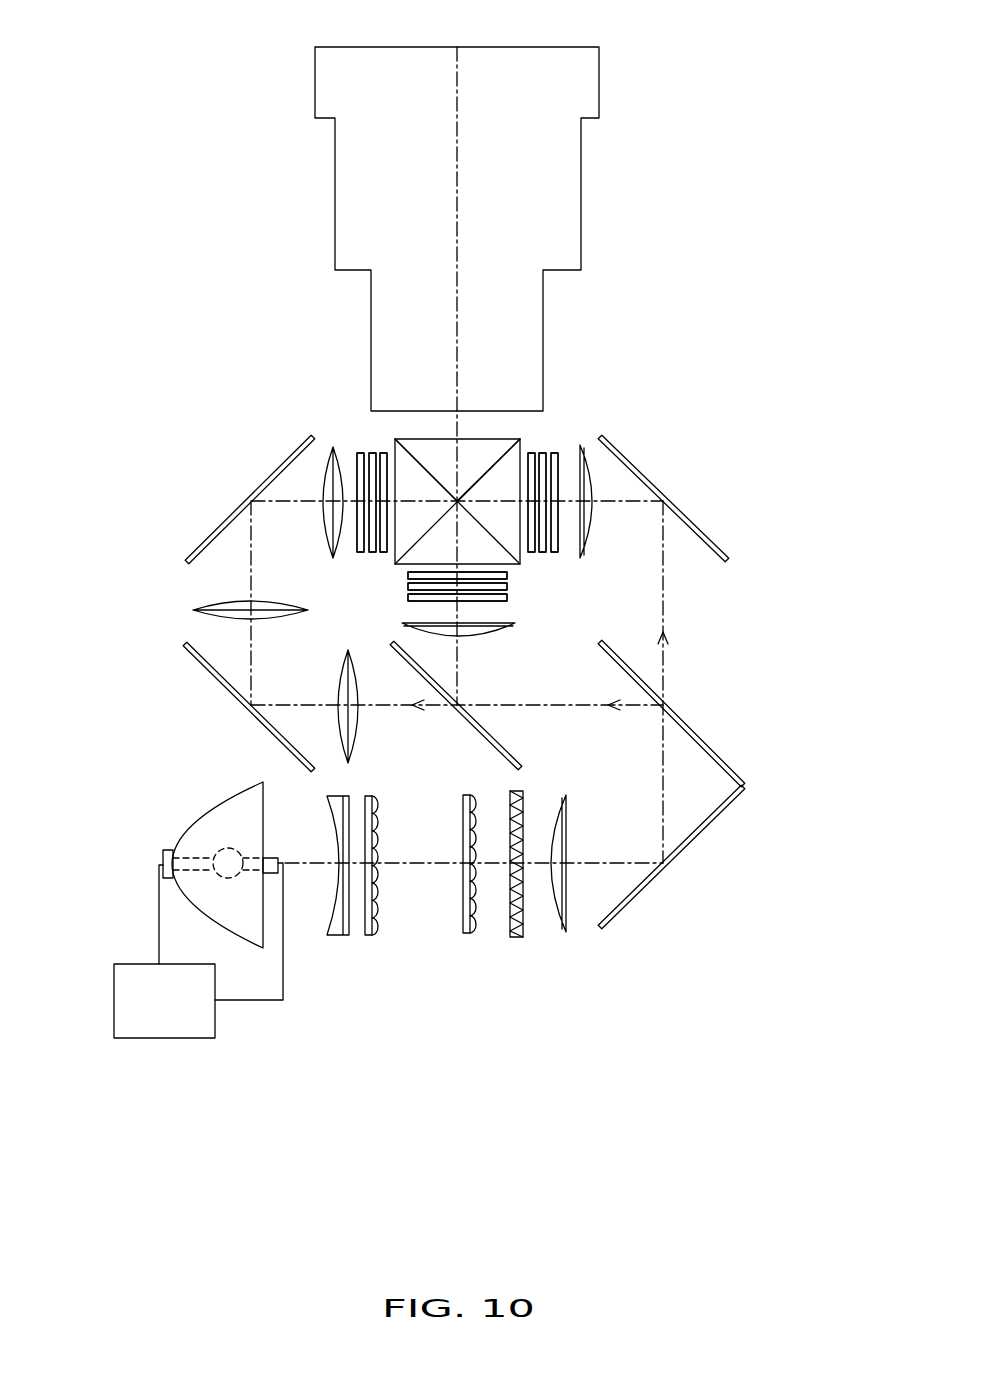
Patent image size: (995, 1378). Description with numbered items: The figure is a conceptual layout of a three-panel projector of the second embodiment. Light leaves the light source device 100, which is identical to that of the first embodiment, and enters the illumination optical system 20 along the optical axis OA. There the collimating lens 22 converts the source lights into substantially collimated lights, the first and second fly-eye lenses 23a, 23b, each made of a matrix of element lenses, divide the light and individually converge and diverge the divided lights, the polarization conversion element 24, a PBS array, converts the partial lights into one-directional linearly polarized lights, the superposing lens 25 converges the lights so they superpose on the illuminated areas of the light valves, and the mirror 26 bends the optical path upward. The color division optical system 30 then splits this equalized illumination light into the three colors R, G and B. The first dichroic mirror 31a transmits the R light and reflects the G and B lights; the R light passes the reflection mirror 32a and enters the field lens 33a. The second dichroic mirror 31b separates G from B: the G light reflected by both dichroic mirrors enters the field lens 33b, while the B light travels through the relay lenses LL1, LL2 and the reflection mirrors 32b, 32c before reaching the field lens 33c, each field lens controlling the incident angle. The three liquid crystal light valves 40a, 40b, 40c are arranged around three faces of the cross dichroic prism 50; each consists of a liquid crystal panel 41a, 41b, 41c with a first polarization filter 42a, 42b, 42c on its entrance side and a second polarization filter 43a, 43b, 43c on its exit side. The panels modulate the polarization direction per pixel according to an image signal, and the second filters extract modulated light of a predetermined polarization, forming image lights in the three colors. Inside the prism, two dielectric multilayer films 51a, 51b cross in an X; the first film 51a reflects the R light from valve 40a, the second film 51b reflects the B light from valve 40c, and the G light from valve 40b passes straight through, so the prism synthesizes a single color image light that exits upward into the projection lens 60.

The projection lens 60 is at (525, 230).
The cross dichroic prism 50 is at (417, 422).
The first dielectric multilayer film 51a is at (412, 452).
The second dielectric multilayer film 51b is at (503, 455).
The liquid crystal light valve 40a is at (574, 435).
The liquid crystal light valve 40b is at (521, 615).
The liquid crystal light valve 40c is at (349, 433).
The liquid crystal panel 41a is at (547, 530).
The liquid crystal panel 41b is at (510, 590).
The liquid crystal panel 41c is at (368, 493).
The first polarization filter 42a is at (553, 552).
The first polarization filter 42b is at (413, 602).
The first polarization filter 42c is at (358, 553).
The second polarization filter 43a is at (530, 552).
The second polarization filter 43b is at (408, 575).
The second polarization filter 43c is at (380, 553).
The field lens 33a is at (590, 495).
The field lens 33b is at (507, 630).
The field lens 33c is at (327, 523).
The reflection mirror 32a is at (717, 540).
The reflection mirror 32b is at (215, 678).
The reflection mirror 32c is at (207, 538).
The first dichroic mirror 31a is at (703, 745).
The second dichroic mirror 31b is at (503, 748).
The color division optical system 30 is at (221, 734).
The mirror 26 is at (642, 900).
The superposing lens 25 is at (565, 937).
The polarization conversion element 24 is at (515, 938).
The first fly-eye lens 23a is at (368, 937).
The second fly-eye lens 23b is at (468, 938).
The collimating lens 22 is at (339, 937).
The illumination optical system 20 is at (392, 1027).
The light source device 100 is at (173, 1057).
The relay lens LL1 is at (353, 740).
The relay lens LL2 is at (193, 608).
The optical axis OA is at (422, 867).
The R light R is at (667, 592).
The G light G is at (457, 685).
The B light B is at (245, 587).